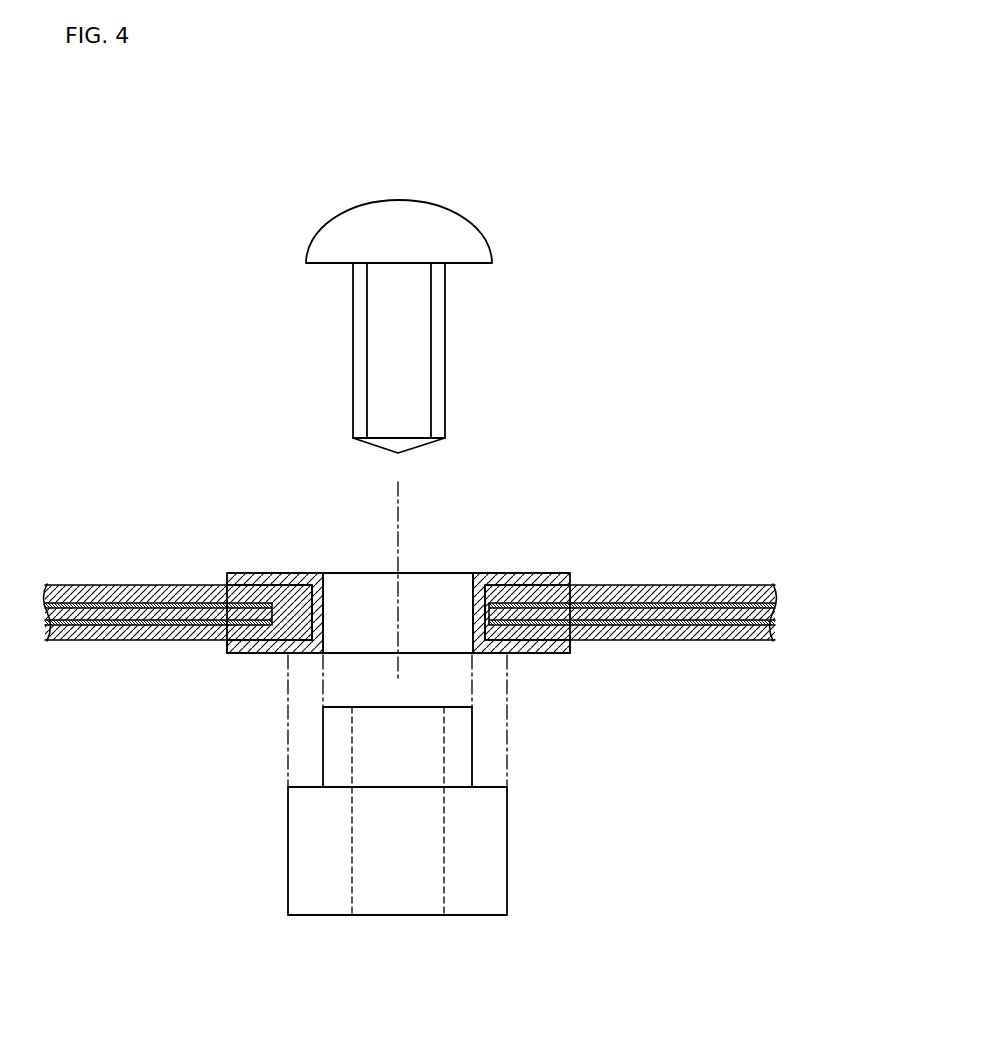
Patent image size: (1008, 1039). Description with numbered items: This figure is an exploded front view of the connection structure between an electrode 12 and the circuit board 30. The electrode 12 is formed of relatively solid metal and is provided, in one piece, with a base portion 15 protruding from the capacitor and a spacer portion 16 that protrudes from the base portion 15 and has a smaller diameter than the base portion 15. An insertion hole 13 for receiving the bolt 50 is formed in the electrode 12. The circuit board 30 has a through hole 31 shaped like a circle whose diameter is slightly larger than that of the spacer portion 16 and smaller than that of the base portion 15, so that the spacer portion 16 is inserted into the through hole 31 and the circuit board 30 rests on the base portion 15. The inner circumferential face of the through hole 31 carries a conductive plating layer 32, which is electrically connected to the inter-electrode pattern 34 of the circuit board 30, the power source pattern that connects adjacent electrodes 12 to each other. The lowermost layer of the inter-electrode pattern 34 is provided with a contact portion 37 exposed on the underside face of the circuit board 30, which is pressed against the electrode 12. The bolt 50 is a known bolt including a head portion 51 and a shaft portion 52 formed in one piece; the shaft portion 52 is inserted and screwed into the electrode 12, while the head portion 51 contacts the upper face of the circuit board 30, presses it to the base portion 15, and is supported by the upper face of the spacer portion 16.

The electrode 12 is at (459, 801).
The insertion hole 13 is at (444, 720).
The base portion 15 is at (507, 835).
The spacer portion 16 is at (472, 740).
The circuit board 30 is at (621, 585).
The through hole 31 is at (473, 581).
The plating layer 32 is at (488, 590).
The inter-electrode pattern 34 is at (410, 620).
The contact portion 37 is at (307, 653).
The bolt 50 is at (486, 326).
The head portion 51 is at (467, 225).
The shaft portion 52 is at (445, 322).